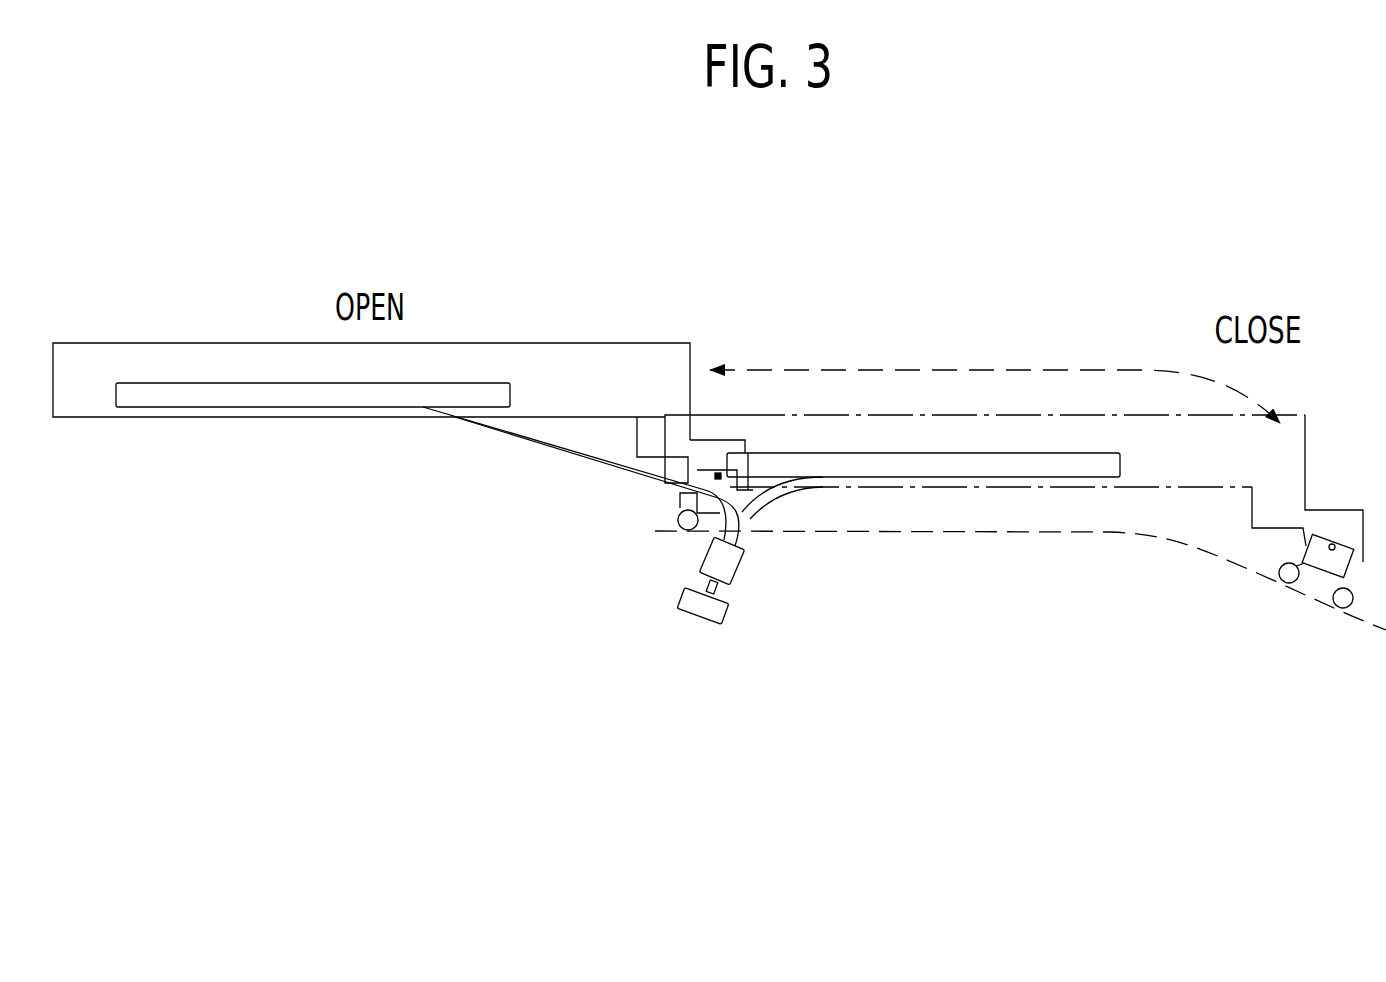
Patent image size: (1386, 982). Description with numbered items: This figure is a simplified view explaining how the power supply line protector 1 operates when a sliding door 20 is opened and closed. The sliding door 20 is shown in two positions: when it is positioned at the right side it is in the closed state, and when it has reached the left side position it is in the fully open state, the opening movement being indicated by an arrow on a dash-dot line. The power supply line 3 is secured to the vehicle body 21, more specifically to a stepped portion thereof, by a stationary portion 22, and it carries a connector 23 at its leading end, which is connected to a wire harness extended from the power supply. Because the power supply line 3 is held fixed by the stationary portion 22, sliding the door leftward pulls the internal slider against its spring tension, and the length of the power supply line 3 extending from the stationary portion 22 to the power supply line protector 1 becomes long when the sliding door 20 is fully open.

The power supply line protector 1 is at (470, 383).
The power supply line 3 is at (567, 447).
The sliding door 20 is at (273, 343).
The vehicle body 21 is at (1198, 552).
The stationary portion 22 is at (725, 563).
The connector 23 is at (707, 607).